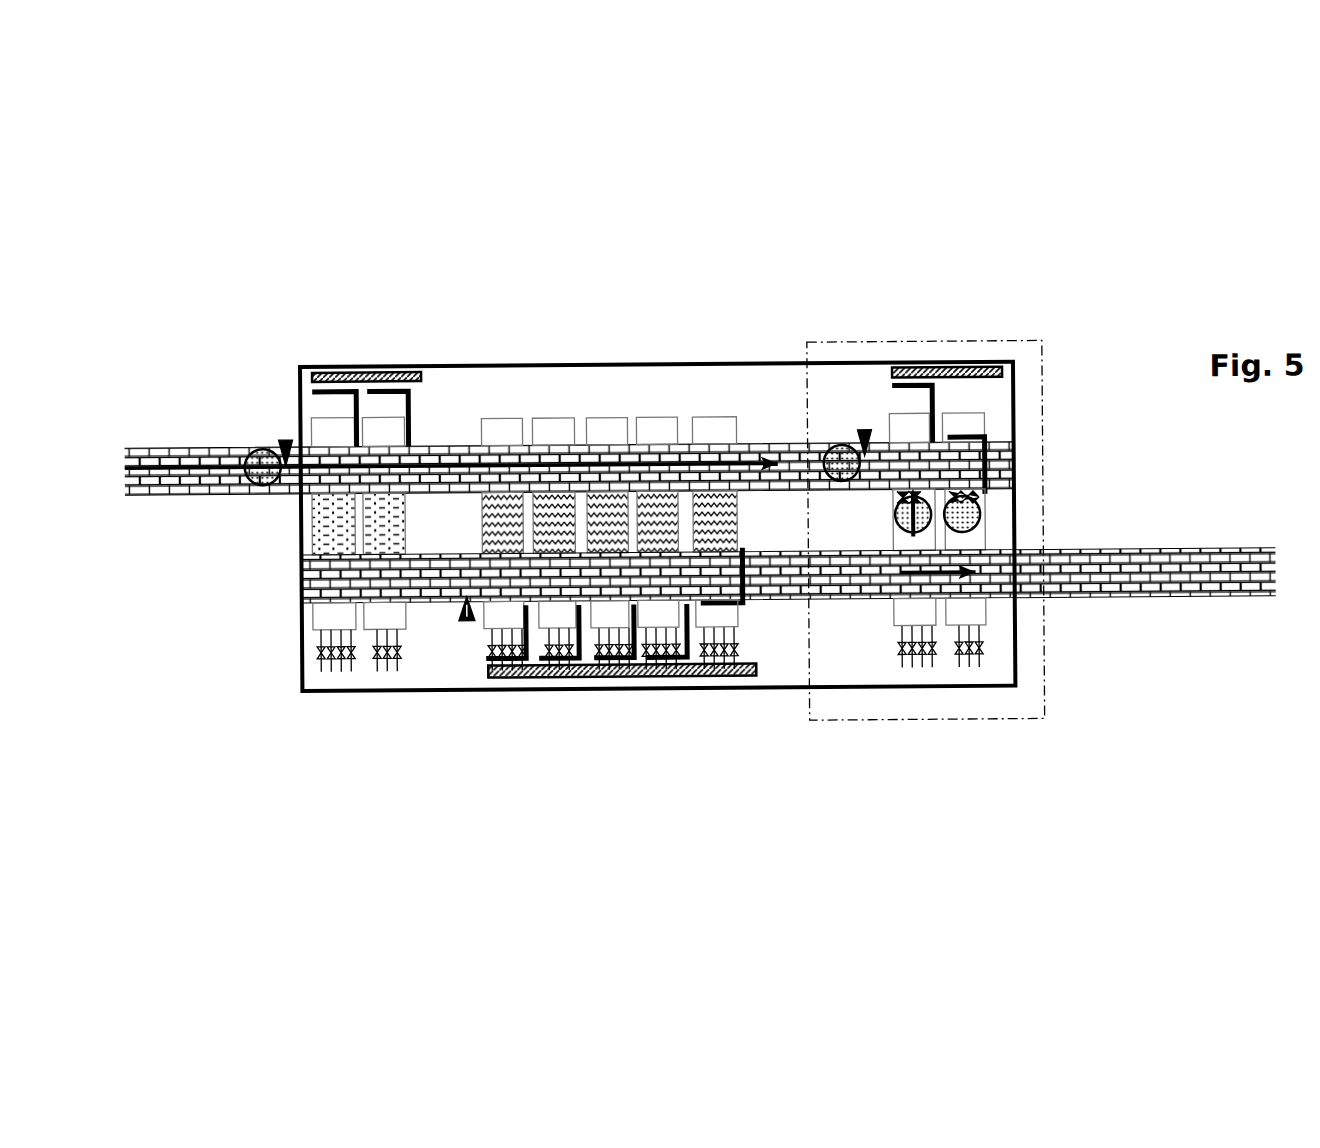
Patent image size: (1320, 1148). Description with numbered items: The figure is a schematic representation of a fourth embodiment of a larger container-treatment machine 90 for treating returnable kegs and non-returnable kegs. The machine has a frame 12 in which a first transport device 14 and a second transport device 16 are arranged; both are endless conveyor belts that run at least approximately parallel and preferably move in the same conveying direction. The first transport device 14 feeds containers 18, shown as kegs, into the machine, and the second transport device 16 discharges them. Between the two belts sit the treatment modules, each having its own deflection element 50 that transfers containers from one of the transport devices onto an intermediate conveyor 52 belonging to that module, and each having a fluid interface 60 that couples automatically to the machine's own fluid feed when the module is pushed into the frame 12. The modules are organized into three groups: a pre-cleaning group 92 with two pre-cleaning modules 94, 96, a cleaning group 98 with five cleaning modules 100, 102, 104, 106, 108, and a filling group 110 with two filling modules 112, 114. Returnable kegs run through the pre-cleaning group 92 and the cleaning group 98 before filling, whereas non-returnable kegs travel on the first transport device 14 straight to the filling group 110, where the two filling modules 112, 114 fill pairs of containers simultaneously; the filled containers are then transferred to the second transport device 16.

The frame 12 is at (452, 367).
The first transport device 14 is at (215, 462).
The second transport device 16 is at (1147, 572).
The container 18 is at (258, 482).
The deflection element 50 is at (397, 377).
The intermediate conveyor 52 is at (318, 525).
The fluid interface 60 is at (338, 653).
The container-treatment machine 90 is at (1088, 306).
The pre-cleaning group 92 is at (330, 356).
The pre-cleaning module 94 is at (593, 695).
The pre-cleaning module 96 is at (385, 652).
The cleaning group 98 is at (518, 712).
The cleaning module 100 is at (507, 418).
The cleaning module 102 is at (559, 641).
The cleaning module 104 is at (605, 418).
The cleaning module 106 is at (656, 418).
The cleaning module 108 is at (724, 418).
The filling group 110 is at (967, 343).
The filling module 112 is at (904, 432).
The filling module 114 is at (992, 430).